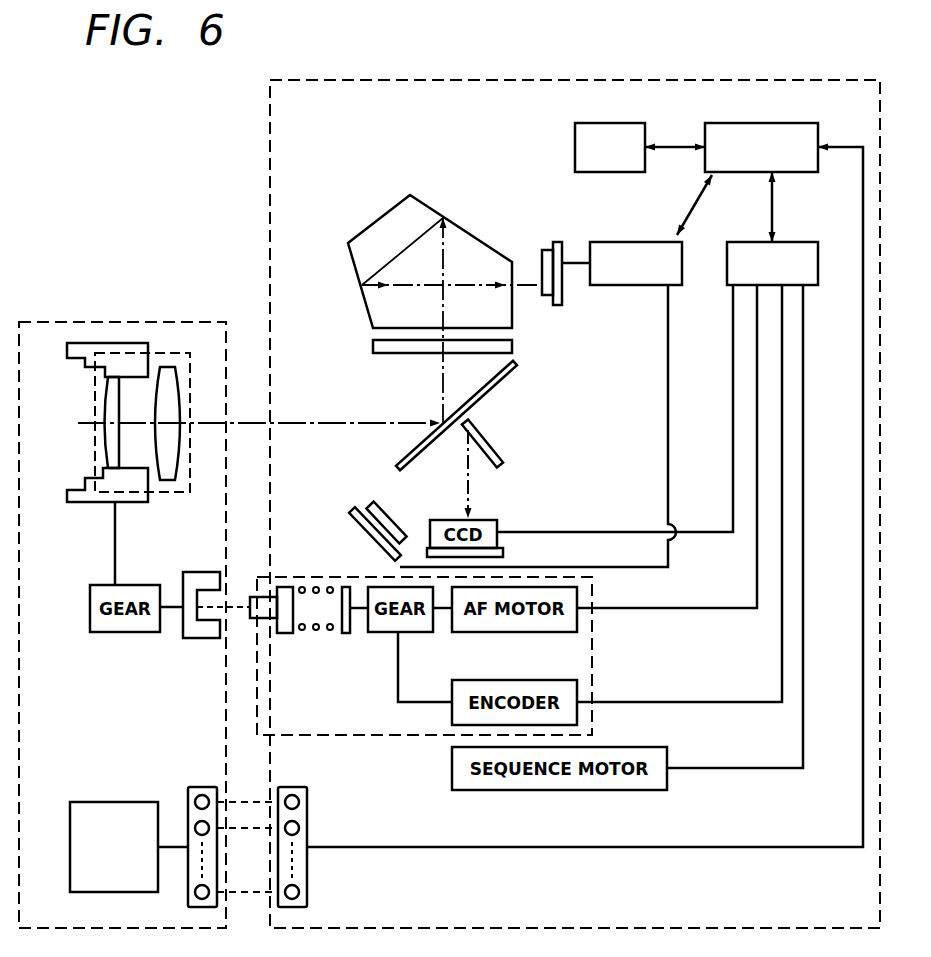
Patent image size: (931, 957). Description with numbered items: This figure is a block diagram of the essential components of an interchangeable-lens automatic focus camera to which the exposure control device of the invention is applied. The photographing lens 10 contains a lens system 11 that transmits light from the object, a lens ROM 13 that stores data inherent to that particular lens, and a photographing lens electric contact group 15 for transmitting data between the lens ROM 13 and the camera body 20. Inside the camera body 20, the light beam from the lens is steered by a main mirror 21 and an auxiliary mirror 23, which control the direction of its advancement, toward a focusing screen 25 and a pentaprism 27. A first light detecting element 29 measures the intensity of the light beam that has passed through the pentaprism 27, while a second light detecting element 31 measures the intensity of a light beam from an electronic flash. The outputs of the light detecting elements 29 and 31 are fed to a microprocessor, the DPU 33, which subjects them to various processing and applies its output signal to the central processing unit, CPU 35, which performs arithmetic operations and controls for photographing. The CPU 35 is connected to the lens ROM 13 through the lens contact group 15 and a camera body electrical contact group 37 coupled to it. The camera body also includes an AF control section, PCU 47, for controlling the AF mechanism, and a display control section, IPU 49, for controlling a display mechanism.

The photographing lens 10 is at (183, 315).
The lens system 11 is at (89, 389).
The lens ROM 13 is at (135, 802).
The photographing lens electric contact group 15 is at (202, 787).
The camera body 20 is at (330, 70).
The main mirror 21 is at (517, 370).
The auxiliary mirror 23 is at (503, 460).
The focusing screen 25 is at (512, 346).
The pentaprism 27 is at (455, 225).
The first light detecting element 29 is at (548, 242).
The second light detecting element 31 is at (404, 522).
The microprocessor (DPU) 33 is at (607, 242).
The central processing unit (CPU) 35 is at (800, 123).
The camera body electrical contact group 37 is at (292, 787).
The AF control section (PCU) 47 is at (805, 242).
The display control section (IPU) 49 is at (632, 123).